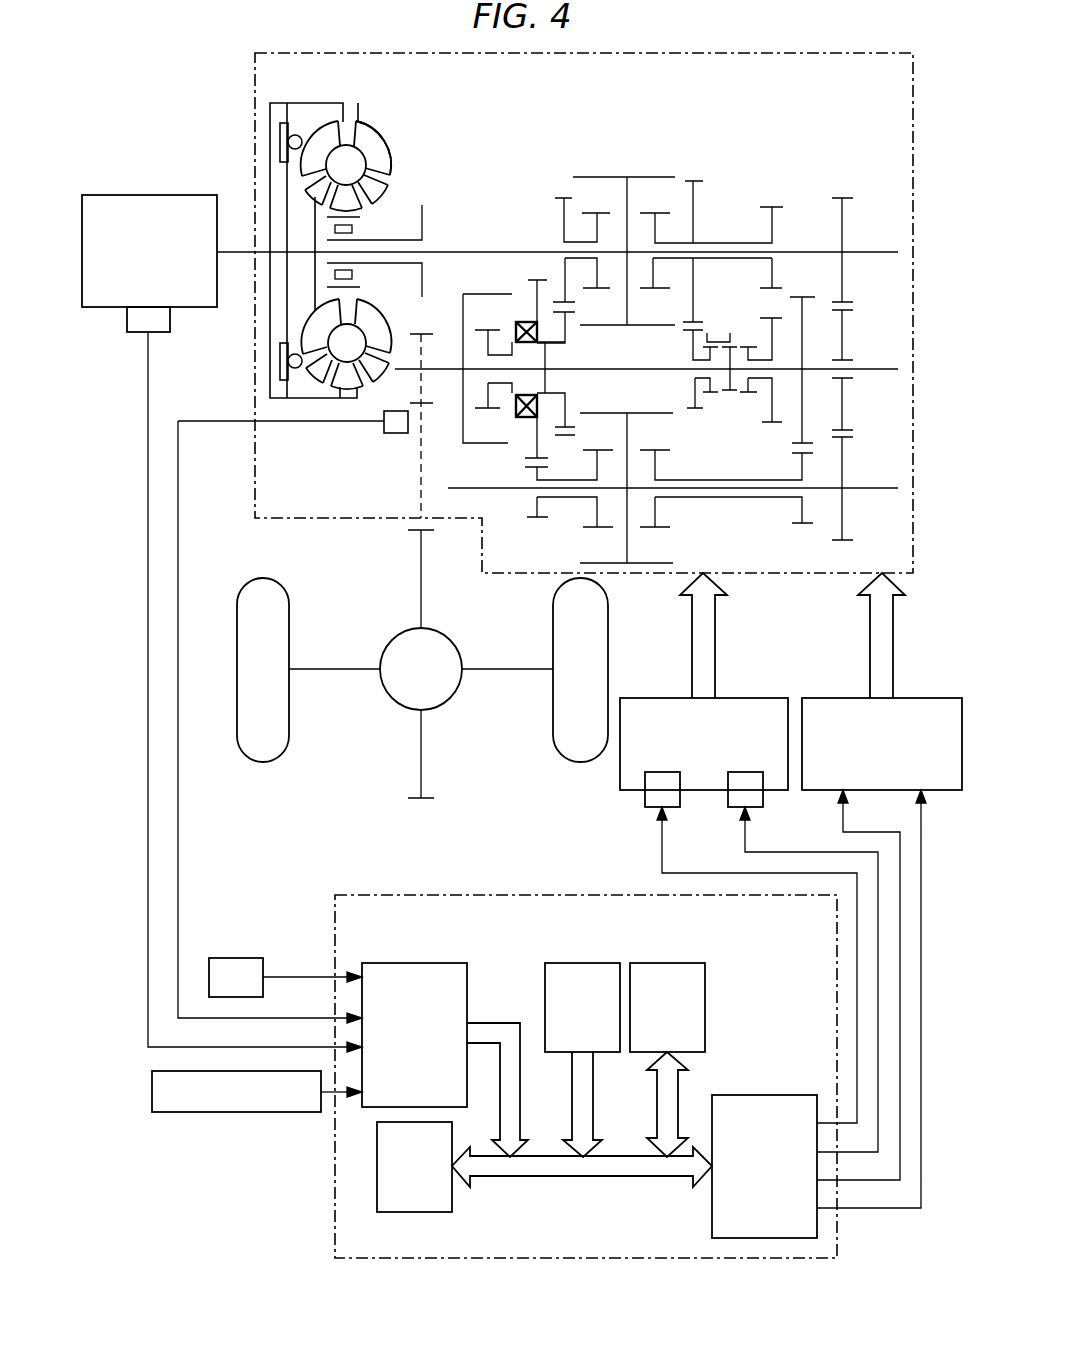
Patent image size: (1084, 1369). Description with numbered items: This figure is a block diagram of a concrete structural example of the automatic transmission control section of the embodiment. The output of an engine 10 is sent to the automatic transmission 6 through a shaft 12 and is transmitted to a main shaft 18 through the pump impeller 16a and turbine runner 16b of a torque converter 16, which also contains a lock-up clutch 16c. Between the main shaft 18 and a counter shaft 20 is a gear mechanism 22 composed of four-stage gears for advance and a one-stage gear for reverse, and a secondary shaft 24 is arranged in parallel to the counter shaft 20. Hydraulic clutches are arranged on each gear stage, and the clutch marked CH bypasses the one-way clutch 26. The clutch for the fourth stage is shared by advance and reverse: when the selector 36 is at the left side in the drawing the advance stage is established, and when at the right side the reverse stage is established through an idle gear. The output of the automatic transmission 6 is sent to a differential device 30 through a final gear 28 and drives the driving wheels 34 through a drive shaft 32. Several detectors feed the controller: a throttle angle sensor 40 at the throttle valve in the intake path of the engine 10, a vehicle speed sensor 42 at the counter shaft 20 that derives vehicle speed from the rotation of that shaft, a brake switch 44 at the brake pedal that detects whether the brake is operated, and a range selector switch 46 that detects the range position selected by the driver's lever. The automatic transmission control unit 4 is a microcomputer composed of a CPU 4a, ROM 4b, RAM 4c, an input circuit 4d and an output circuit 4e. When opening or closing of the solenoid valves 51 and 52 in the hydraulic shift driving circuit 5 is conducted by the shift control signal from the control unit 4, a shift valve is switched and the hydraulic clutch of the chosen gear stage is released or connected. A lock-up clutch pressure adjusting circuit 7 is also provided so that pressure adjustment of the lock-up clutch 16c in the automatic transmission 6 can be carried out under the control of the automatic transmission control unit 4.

The automatic transmission control unit 4 is at (503, 895).
The CPU 4a is at (452, 1200).
The ROM 4b is at (583, 963).
The RAM 4c is at (665, 960).
The input circuit 4d is at (412, 963).
The output circuit 4e is at (762, 1095).
The hydraulic shift driving circuit 5 is at (742, 698).
The automatic transmission 6 is at (255, 72).
The lock-up clutch pressure adjusting circuit 7 is at (921, 698).
The engine 10 is at (147, 195).
The shaft 12 is at (233, 251).
The torque converter 16 is at (392, 160).
The pump impeller 16a is at (362, 137).
The turbine runner 16b is at (327, 135).
The lock-up clutch 16c is at (284, 381).
The main shaft 18 is at (487, 251).
The counter shaft 20 is at (442, 369).
The gear mechanism 22 is at (712, 189).
The secondary shaft 24 is at (472, 488).
The one-way clutch 26 is at (521, 320).
The final gear 28 is at (428, 598).
The differential device 30 is at (392, 650).
The drive shaft 32 is at (330, 670).
The driving wheels 34 is at (263, 762).
The selector 36 is at (732, 392).
The throttle angle sensor 40 is at (170, 318).
The vehicle speed sensor 42 is at (396, 433).
The brake switch 44 is at (237, 1112).
The range selector switch 46 is at (235, 958).
The solenoid valve 51 is at (751, 947).
The solenoid valve 52 is at (803, 962).